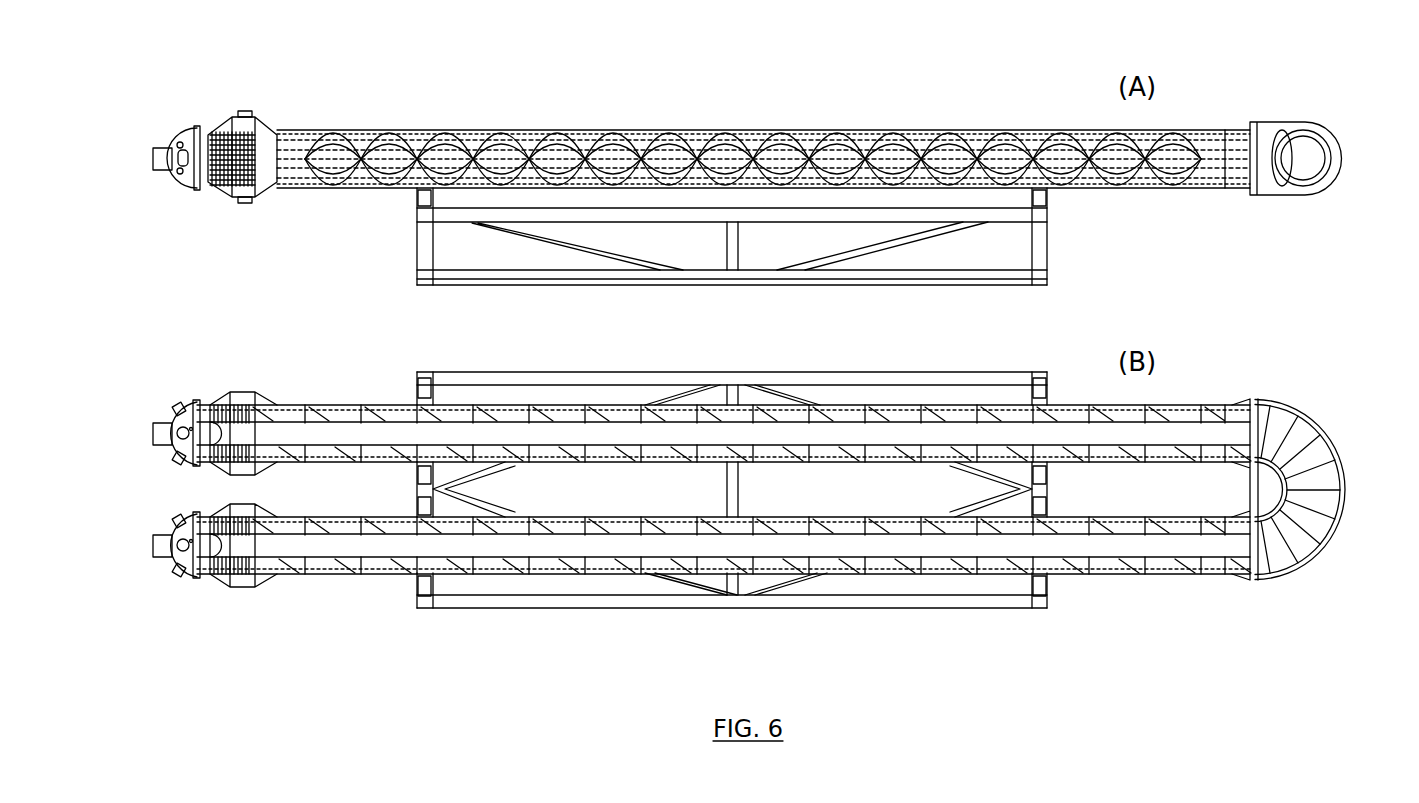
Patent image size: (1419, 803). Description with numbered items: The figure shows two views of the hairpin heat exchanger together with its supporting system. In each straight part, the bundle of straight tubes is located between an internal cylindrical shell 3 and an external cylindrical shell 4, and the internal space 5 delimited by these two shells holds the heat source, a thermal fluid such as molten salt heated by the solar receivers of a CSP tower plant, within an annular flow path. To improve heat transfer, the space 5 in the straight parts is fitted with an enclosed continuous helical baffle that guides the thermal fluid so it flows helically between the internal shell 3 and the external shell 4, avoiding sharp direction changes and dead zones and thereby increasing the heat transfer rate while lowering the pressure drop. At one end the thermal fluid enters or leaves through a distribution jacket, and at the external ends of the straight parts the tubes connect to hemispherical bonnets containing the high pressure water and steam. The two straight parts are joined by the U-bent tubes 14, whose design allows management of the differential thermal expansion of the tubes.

The internal cylindrical shell 3 is at (380, 565).
The external cylindrical shell 4 is at (286, 572).
The intershell space 5 is at (1178, 408).
The U-bent tube 14 is at (1340, 458).